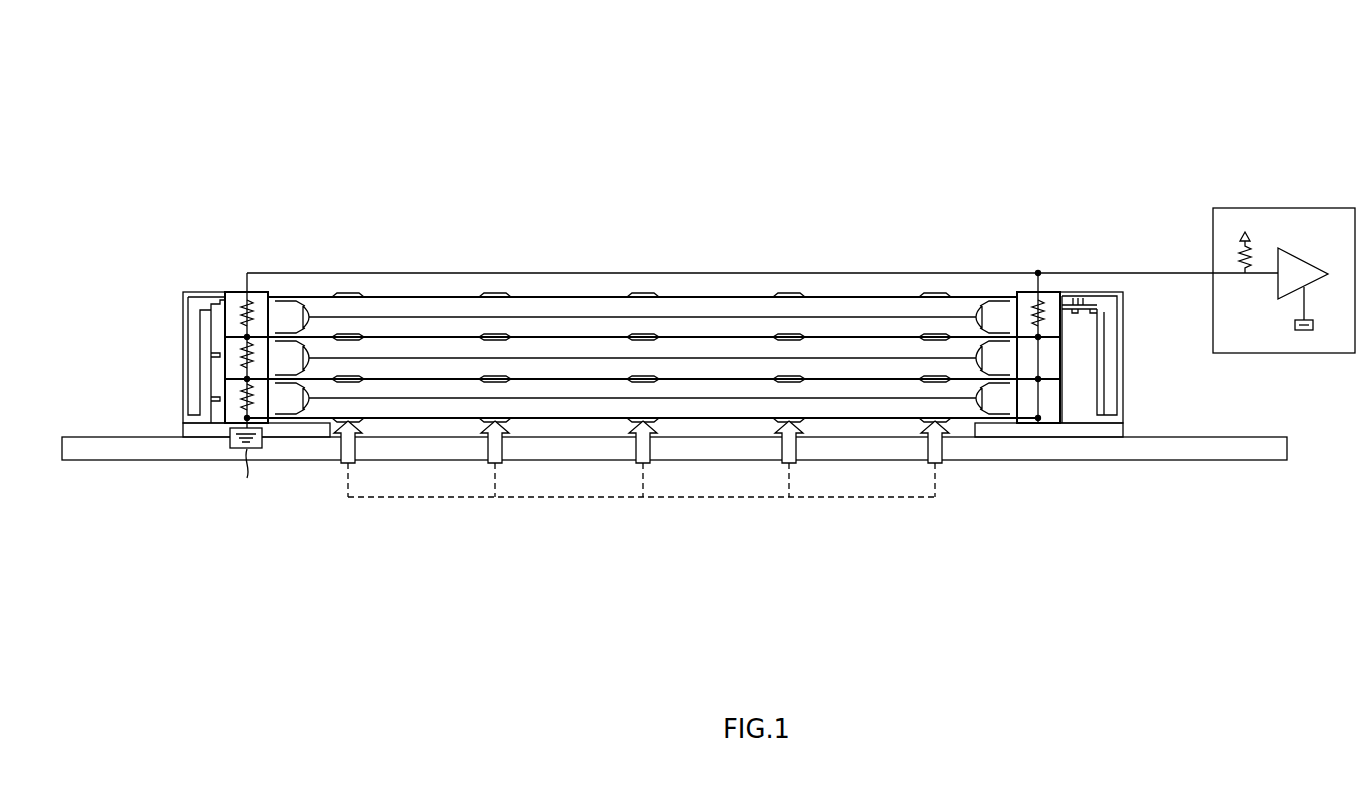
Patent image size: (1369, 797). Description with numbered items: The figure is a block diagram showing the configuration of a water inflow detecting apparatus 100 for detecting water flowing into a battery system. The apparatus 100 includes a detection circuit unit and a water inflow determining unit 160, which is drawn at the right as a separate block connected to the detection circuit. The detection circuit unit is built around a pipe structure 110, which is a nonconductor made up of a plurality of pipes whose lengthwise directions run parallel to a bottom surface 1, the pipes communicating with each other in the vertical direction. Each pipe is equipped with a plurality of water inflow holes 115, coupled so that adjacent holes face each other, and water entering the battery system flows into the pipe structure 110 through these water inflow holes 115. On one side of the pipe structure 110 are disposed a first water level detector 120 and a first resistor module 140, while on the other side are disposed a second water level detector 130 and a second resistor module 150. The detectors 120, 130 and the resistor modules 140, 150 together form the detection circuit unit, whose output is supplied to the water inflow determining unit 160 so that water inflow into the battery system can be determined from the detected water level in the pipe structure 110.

The bottom surface 1 is at (1290, 447).
The water inflow detecting apparatus 100 is at (976, 110).
The pipe structure 110 is at (565, 296).
The water inflow hole 115 is at (677, 500).
The first water level detector 120 is at (314, 336).
The second water level detector 130 is at (1000, 336).
The first resistor module 140 is at (230, 291).
The second resistor module 150 is at (1053, 291).
The water inflow determining unit 160 is at (1283, 207).